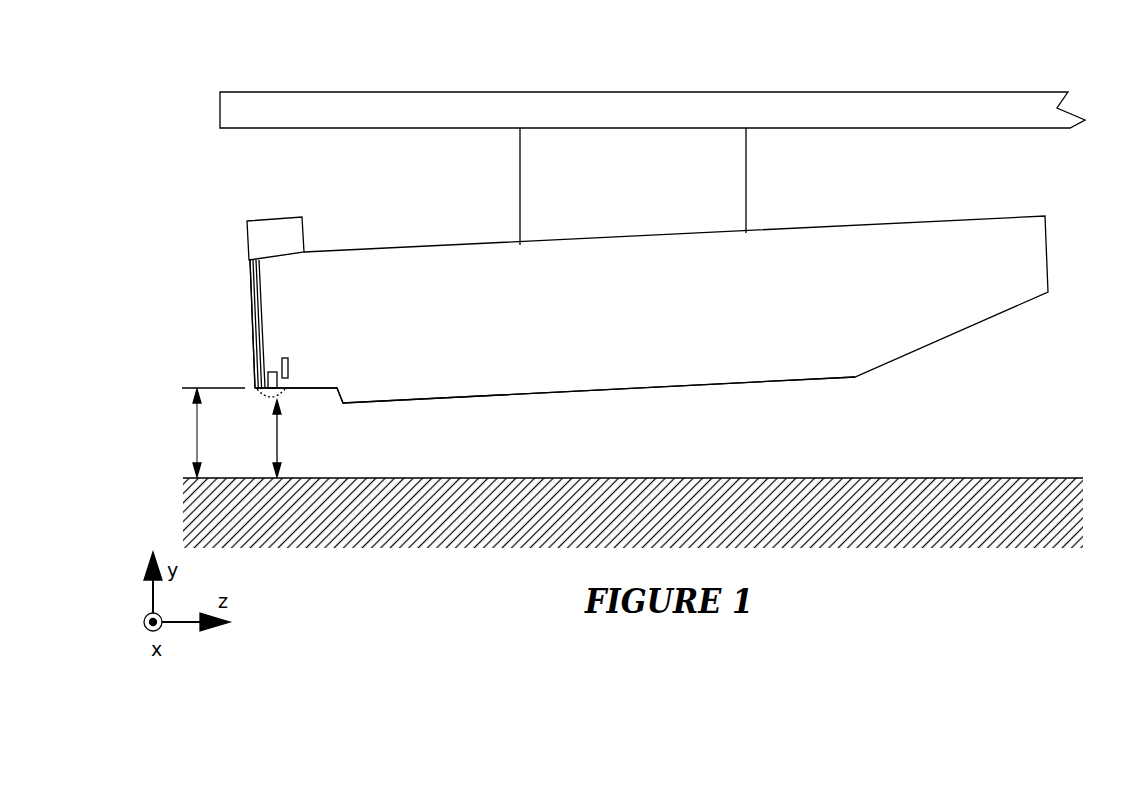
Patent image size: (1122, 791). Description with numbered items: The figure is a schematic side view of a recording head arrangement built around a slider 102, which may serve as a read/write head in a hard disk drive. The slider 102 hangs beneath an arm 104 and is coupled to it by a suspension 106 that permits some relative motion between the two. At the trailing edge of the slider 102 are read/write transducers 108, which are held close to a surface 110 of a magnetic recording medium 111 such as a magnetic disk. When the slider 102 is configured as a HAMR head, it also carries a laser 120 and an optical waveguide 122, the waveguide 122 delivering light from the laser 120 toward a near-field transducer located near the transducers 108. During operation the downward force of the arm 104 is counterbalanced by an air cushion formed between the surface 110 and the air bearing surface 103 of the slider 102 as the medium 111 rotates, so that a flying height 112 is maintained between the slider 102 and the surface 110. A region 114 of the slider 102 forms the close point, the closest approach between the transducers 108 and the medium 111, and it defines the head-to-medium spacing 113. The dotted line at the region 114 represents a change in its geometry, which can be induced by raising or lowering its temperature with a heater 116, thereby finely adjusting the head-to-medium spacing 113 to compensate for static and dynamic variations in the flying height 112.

The slider 102 is at (912, 232).
The air bearing surface 103 is at (465, 402).
The arm 104 is at (978, 100).
The suspension 106 is at (746, 175).
The read/write transducers 108 is at (262, 368).
The surface 110 is at (917, 478).
The magnetic recording medium 111 is at (935, 533).
The flying height 112 is at (195, 432).
The head-to-medium spacing 113 is at (255, 438).
The region 114 is at (285, 398).
The heater 116 is at (285, 357).
The laser 120 is at (275, 230).
The optical waveguide 122 is at (257, 292).